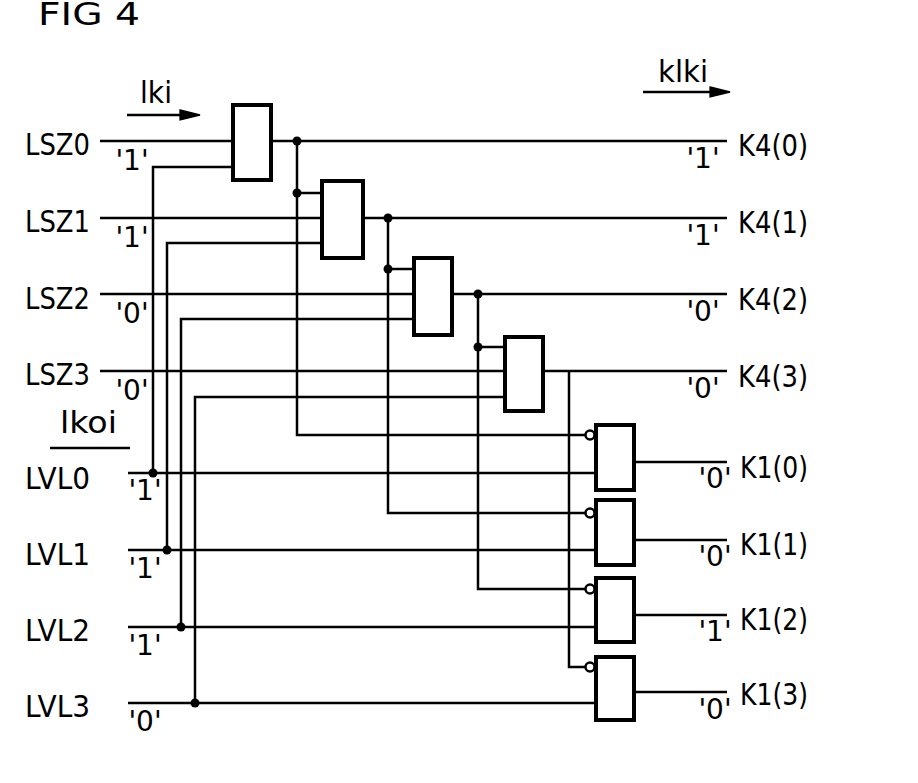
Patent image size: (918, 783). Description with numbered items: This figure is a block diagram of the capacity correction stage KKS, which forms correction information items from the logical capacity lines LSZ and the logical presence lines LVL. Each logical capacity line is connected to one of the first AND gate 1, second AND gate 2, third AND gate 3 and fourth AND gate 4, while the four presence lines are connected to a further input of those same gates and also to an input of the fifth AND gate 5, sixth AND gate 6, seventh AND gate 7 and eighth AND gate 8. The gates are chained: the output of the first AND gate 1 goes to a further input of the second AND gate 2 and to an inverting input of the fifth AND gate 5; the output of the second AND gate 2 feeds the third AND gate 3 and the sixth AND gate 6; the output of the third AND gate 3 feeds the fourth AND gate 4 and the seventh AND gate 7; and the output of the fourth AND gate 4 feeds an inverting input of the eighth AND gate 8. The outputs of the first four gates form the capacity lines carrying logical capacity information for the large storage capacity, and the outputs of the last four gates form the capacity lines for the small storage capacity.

The first AND gate 1 is at (480, 141).
The second AND gate 2 is at (524, 219).
The third AND gate 3 is at (570, 296).
The fourth AND gate 4 is at (616, 374).
The fifth AND gate 5 is at (657, 457).
The sixth AND gate 6 is at (657, 532).
The seventh AND gate 7 is at (657, 609).
The eighth AND gate 8 is at (657, 687).